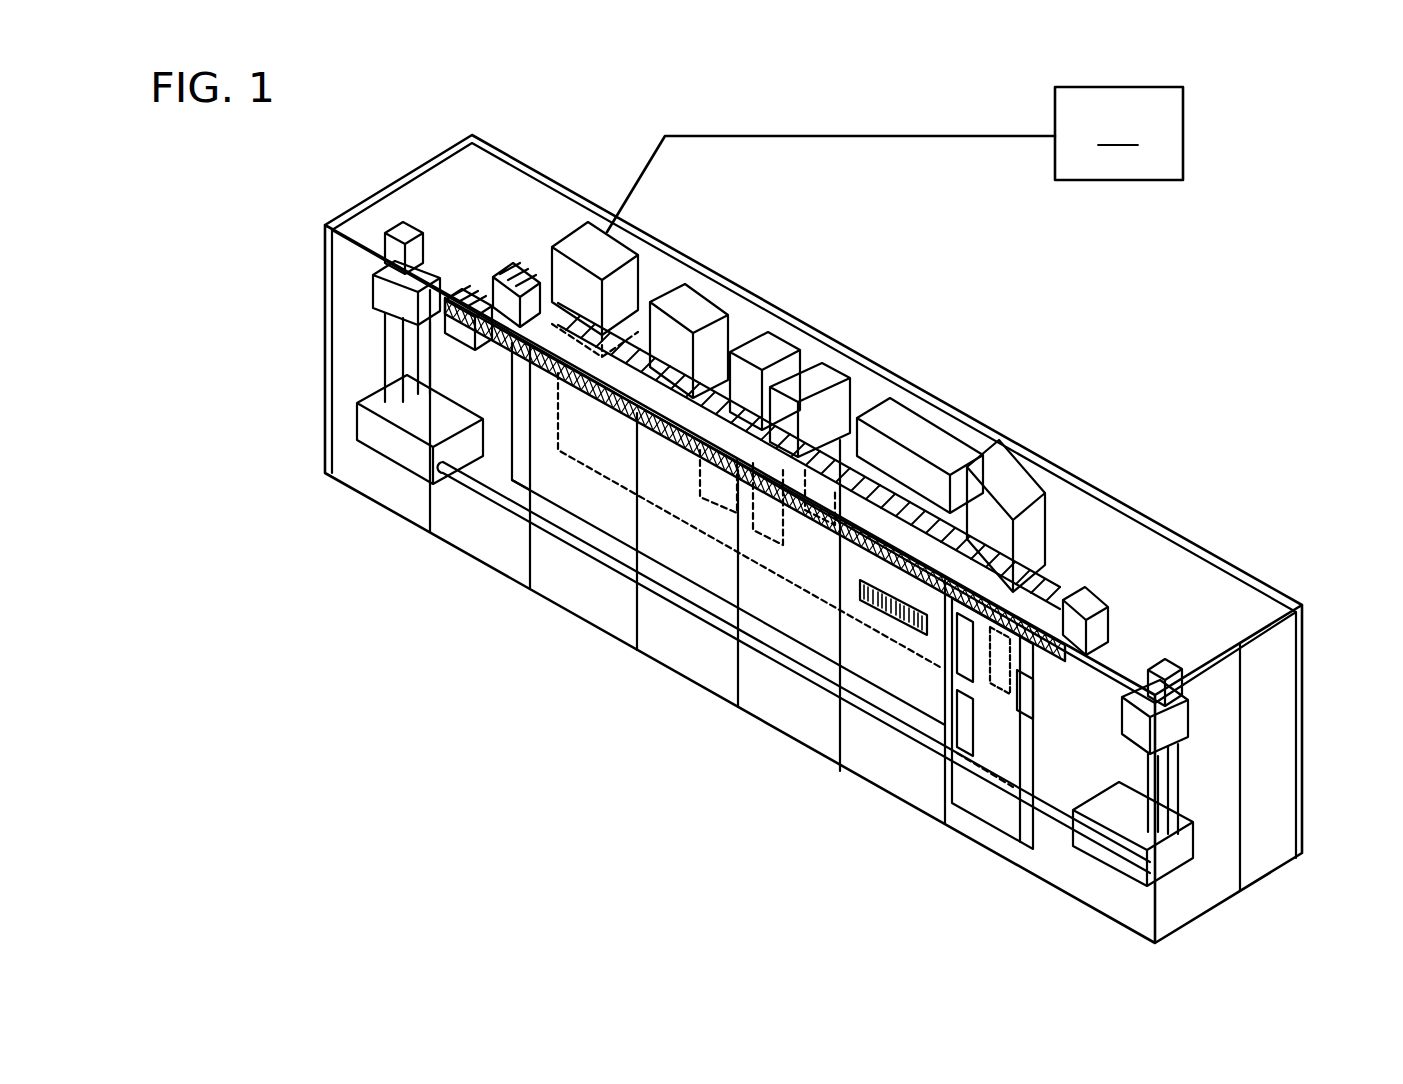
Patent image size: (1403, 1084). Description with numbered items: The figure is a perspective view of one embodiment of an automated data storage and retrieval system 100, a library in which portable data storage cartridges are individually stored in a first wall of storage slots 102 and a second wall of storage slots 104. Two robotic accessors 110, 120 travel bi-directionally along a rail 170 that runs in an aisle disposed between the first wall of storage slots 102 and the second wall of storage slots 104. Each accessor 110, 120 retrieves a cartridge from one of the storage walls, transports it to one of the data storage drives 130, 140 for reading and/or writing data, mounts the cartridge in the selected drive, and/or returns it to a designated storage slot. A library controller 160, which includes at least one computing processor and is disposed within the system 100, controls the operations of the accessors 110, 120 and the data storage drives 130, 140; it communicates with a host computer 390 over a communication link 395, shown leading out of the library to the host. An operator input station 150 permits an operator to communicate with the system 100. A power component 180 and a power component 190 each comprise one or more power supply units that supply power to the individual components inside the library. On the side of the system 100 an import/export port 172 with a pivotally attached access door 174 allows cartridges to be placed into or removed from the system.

The automated data storage and retrieval system 100 is at (724, 803).
The first wall of storage slots 102 is at (660, 298).
The second wall of storage slots 104 is at (565, 497).
The accessor 110 is at (380, 274).
The accessor 120 is at (1180, 725).
The data storage drive 130 is at (787, 347).
The data storage drive 140 is at (838, 378).
The operator input station 150 is at (713, 303).
The library controller 160 is at (587, 232).
The rail 170 is at (677, 603).
The import/export port 172 is at (998, 793).
The access door 174 is at (988, 747).
The power component 180 is at (1088, 598).
The power component 190 is at (1058, 667).
The host computer 390 is at (1119, 133).
The communication link 395 is at (886, 135).